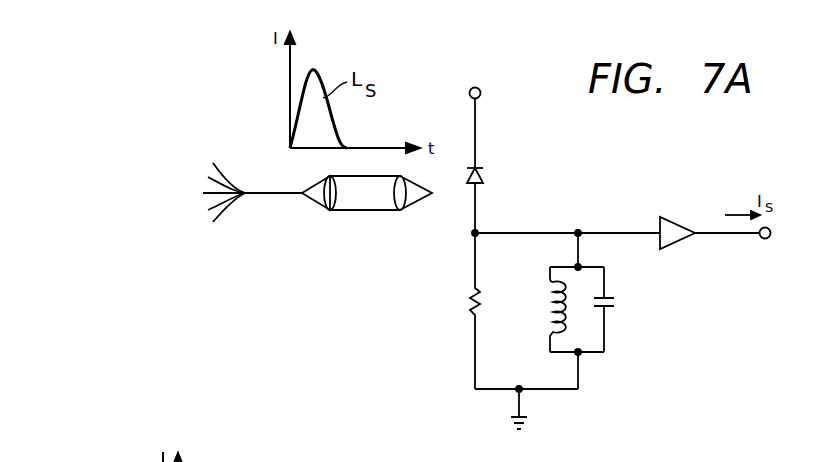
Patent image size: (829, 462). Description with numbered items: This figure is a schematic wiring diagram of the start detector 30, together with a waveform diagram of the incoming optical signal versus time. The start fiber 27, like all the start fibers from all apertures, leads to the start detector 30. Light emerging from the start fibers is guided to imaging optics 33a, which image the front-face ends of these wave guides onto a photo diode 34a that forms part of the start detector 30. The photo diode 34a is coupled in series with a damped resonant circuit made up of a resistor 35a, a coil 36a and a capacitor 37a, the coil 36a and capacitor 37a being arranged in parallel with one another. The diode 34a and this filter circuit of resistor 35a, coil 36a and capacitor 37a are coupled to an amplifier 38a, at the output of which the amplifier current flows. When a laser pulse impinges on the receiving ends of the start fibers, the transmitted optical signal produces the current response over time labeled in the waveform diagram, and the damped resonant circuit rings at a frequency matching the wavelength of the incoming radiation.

The start fiber 27 is at (267, 200).
The start detector 30 is at (477, 66).
The imaging optics 33a is at (367, 202).
The photo diode 34a is at (486, 175).
The resistor 35a is at (470, 311).
The coil 36a is at (547, 330).
The capacitor 37a is at (612, 310).
The amplifier 38a is at (670, 216).